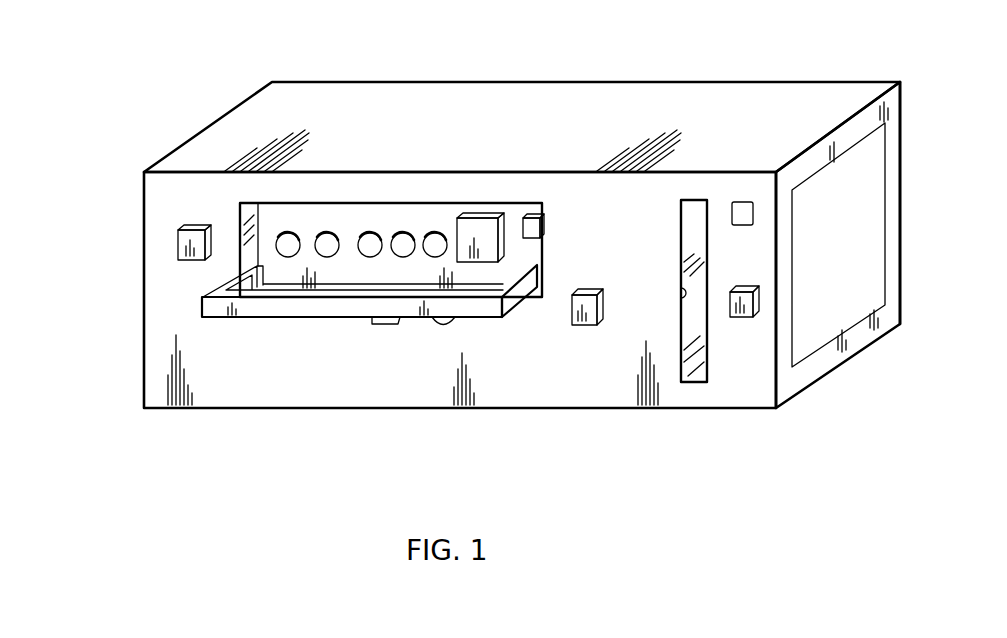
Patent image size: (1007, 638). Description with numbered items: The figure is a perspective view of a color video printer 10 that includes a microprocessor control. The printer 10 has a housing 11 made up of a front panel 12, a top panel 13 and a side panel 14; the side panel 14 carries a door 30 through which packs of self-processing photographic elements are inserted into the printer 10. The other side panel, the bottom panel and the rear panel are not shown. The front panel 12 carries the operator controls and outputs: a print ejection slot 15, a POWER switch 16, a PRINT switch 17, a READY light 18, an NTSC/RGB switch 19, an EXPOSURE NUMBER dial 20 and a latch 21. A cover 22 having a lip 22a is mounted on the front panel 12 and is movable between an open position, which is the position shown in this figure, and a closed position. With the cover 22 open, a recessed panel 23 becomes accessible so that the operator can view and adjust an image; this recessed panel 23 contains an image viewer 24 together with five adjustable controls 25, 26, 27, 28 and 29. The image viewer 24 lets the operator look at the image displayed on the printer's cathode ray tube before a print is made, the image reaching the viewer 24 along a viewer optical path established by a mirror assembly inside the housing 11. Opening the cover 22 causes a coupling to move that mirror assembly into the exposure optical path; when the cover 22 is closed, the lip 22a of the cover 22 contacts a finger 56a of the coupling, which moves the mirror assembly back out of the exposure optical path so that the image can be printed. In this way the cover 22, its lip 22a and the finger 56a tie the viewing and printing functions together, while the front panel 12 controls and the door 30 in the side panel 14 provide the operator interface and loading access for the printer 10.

The printer 10 is at (597, 77).
The housing 11 is at (875, 82).
The front panel 12 is at (748, 392).
The top panel 13 is at (236, 121).
The side panel 14 is at (892, 113).
The print ejection slot 15 is at (680, 299).
The POWER switch 16 is at (196, 236).
The PRINT switch 17 is at (381, 326).
The READY light 18 is at (445, 328).
The NTSC/RGB switch 19 is at (592, 295).
The EXPOSURE NUMBER dial 20 is at (742, 203).
The latch 21 is at (752, 292).
The cover 22 is at (299, 310).
The lip 22a is at (522, 302).
The recessed panel 23 is at (359, 203).
The image viewer 24 is at (482, 224).
The adjustable control 25 is at (290, 235).
The adjustable control 26 is at (329, 235).
The adjustable control 27 is at (372, 235).
The adjustable control 28 is at (405, 235).
The adjustable control 29 is at (437, 235).
The door 30 is at (892, 230).
The finger 56a is at (534, 230).